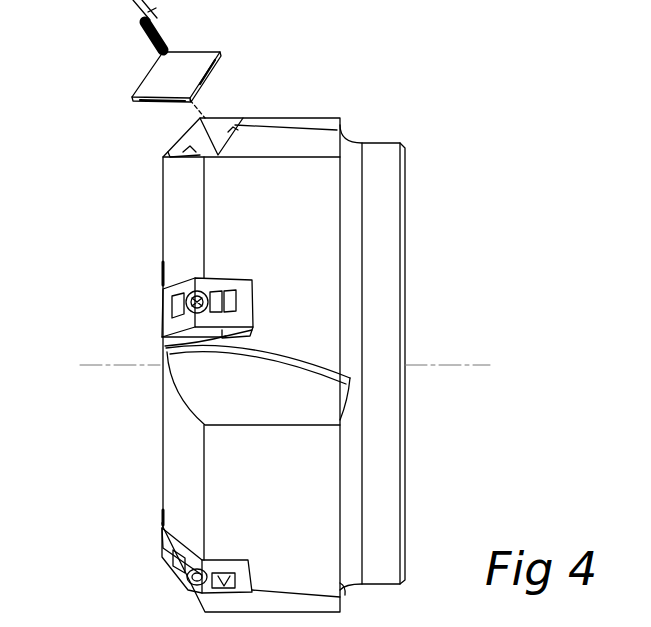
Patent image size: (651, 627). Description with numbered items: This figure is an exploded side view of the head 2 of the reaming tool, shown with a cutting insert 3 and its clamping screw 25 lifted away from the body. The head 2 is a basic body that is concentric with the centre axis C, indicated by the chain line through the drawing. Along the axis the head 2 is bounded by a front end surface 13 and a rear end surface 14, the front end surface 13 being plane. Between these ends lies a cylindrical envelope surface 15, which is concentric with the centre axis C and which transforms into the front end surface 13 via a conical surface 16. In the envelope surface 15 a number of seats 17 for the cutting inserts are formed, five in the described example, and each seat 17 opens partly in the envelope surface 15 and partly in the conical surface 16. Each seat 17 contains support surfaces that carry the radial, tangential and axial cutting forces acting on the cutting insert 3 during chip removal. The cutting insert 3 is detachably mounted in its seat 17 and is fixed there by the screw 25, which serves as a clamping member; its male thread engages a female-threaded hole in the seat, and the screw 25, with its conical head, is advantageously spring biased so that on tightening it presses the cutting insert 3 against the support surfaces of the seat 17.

The head 2 is at (150, 419).
The cutting insert 3 is at (138, 78).
The front end surface 13 is at (163, 233).
The rear end surface 14 is at (405, 194).
The cylindrical envelope surface 15 is at (292, 508).
The conical surface 16 is at (200, 475).
The seat 17 is at (226, 140).
The screw 25 is at (127, 15).
The centre axis C is at (476, 365).